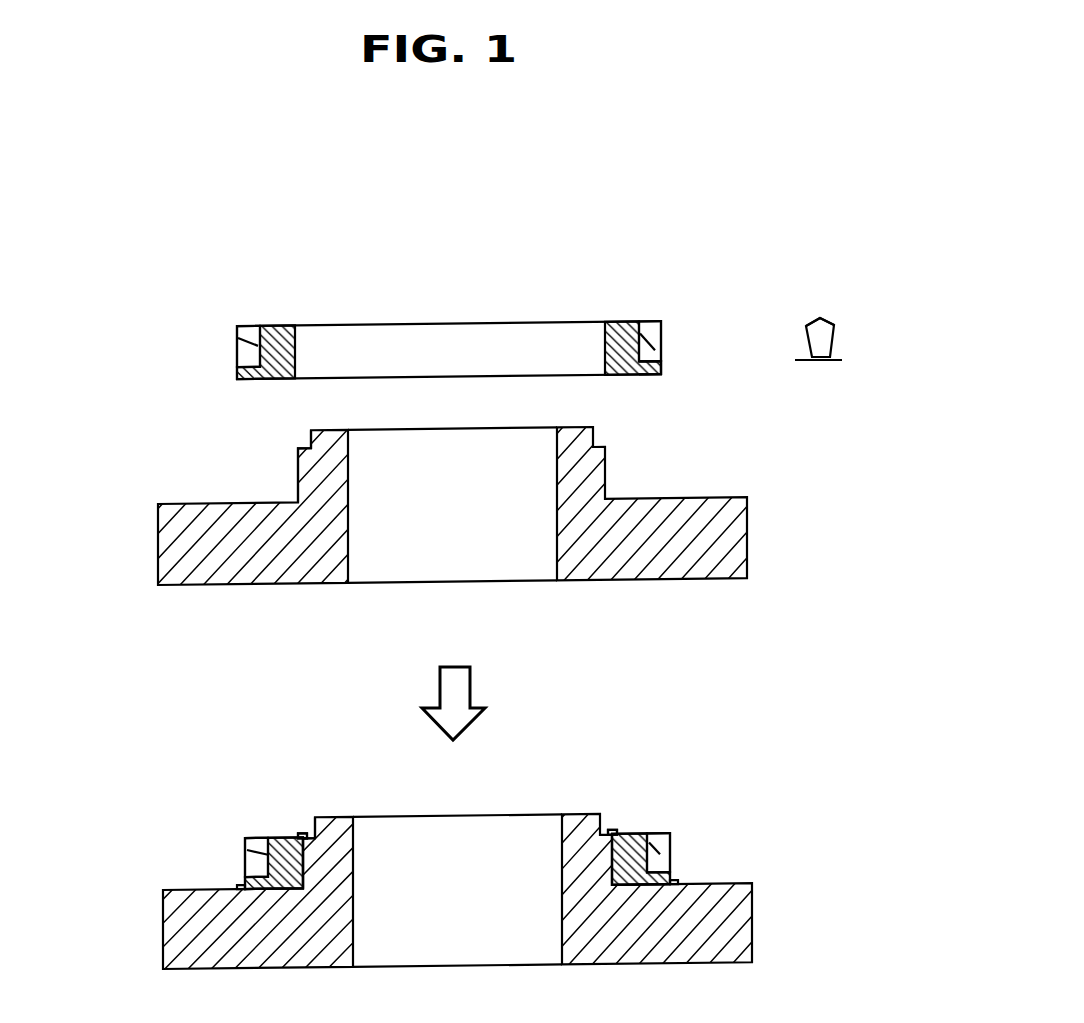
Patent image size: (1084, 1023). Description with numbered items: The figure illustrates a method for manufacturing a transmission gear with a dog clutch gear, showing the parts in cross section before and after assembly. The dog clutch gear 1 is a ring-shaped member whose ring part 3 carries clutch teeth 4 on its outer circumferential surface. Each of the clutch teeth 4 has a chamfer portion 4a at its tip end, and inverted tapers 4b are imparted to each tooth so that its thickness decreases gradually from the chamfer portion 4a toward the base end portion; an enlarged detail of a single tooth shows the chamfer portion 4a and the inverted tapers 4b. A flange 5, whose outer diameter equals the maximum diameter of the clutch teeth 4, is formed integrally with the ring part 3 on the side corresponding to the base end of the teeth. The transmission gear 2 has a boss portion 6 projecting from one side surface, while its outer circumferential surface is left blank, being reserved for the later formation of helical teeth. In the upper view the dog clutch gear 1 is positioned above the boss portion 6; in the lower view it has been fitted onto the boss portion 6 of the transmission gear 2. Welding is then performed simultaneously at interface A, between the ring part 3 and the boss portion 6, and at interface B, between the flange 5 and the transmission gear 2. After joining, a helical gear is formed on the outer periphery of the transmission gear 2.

The dog clutch gear 1 is at (255, 285).
The transmission gear 2 is at (207, 442).
The ring part 3 is at (615, 323).
The clutch teeth 4 is at (662, 333).
The chamfer portion 4a is at (818, 302).
The inverted tapers 4b is at (800, 348).
The flange 5 is at (643, 375).
The boss portion 6 is at (317, 472).
The interface A is at (303, 827).
The interface B is at (233, 883).